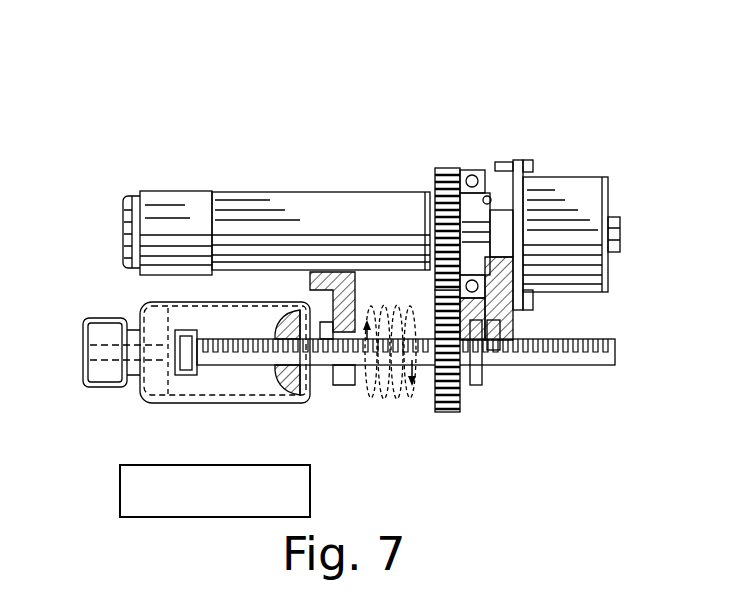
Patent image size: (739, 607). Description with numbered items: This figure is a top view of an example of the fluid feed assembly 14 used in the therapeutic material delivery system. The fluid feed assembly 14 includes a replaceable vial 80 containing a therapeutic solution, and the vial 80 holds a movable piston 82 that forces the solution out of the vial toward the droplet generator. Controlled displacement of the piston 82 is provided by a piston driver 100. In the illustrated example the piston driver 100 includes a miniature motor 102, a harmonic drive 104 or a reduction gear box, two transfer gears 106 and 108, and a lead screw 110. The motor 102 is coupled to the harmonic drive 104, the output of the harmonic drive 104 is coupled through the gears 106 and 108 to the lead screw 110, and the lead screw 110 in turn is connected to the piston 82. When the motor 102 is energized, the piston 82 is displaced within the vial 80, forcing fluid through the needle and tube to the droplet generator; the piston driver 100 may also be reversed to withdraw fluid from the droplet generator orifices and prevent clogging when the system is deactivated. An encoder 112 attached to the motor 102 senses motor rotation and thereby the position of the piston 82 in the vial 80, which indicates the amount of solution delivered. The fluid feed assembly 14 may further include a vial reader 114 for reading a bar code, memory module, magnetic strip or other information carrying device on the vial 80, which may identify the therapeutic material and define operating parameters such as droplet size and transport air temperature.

The fluid feed assembly 14 is at (42, 138).
The piston driver 100 is at (457, 76).
The vial 80 is at (152, 315).
The piston 82 is at (300, 404).
The motor 102 is at (284, 192).
The harmonic drive 104 is at (572, 177).
The transfer gear 106 is at (445, 168).
The transfer gear 108 is at (455, 413).
The lead screw 110 is at (378, 401).
The encoder 112 is at (176, 191).
The vial reader 114 is at (120, 488).